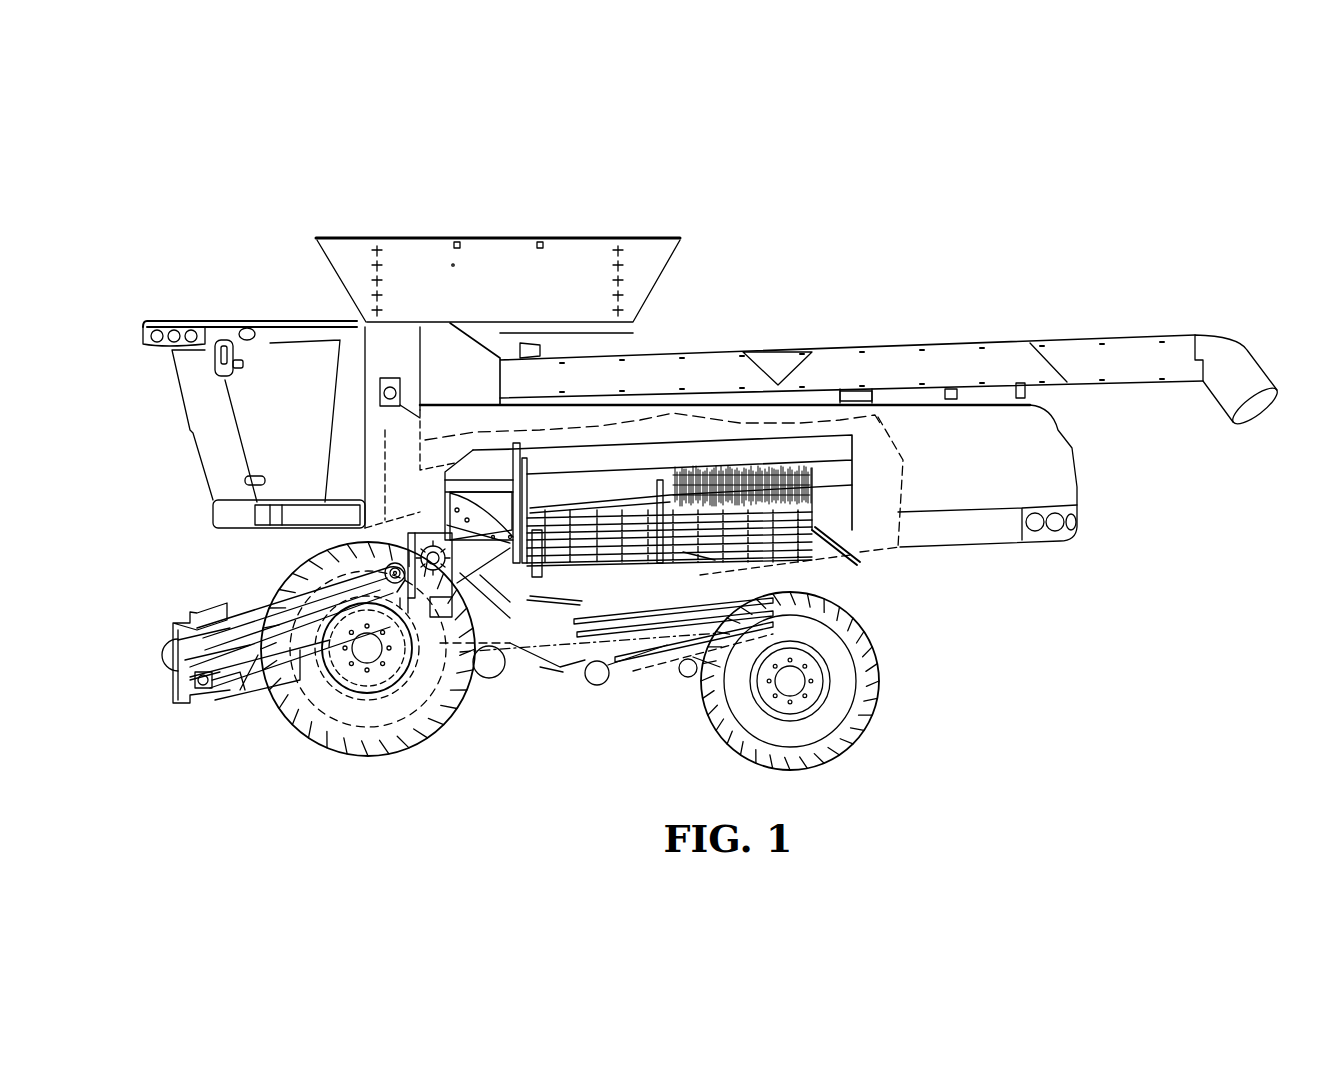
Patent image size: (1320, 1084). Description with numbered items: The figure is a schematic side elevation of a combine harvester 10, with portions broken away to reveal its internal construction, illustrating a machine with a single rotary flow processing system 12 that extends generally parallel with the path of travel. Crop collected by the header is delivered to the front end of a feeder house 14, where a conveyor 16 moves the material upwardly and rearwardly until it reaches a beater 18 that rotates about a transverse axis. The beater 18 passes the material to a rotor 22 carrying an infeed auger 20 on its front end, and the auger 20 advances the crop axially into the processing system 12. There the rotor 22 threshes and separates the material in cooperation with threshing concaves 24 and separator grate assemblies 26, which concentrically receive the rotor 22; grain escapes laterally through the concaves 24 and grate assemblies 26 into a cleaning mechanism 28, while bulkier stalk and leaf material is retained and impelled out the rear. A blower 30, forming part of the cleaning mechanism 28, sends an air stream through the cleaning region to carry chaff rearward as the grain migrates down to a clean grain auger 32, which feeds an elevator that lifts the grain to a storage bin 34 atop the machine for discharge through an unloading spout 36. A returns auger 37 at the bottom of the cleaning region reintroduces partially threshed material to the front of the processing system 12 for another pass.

The combine harvester 10 is at (1000, 250).
The rotary flow processing system 12 is at (670, 433).
The feeder house 14 is at (195, 603).
The conveyor 16 is at (252, 683).
The beater 18 is at (480, 590).
The infeed auger 20 is at (455, 545).
The rotor 22 is at (484, 508).
The threshing concaves 24 is at (632, 522).
The separator grate assemblies 26 is at (790, 548).
The cleaning mechanism 28 is at (662, 614).
The blower 30 is at (492, 667).
The clean grain auger 32 is at (599, 678).
The storage bin 34 is at (403, 252).
The unloading spout 36 is at (1140, 350).
The returns auger 37 is at (688, 672).